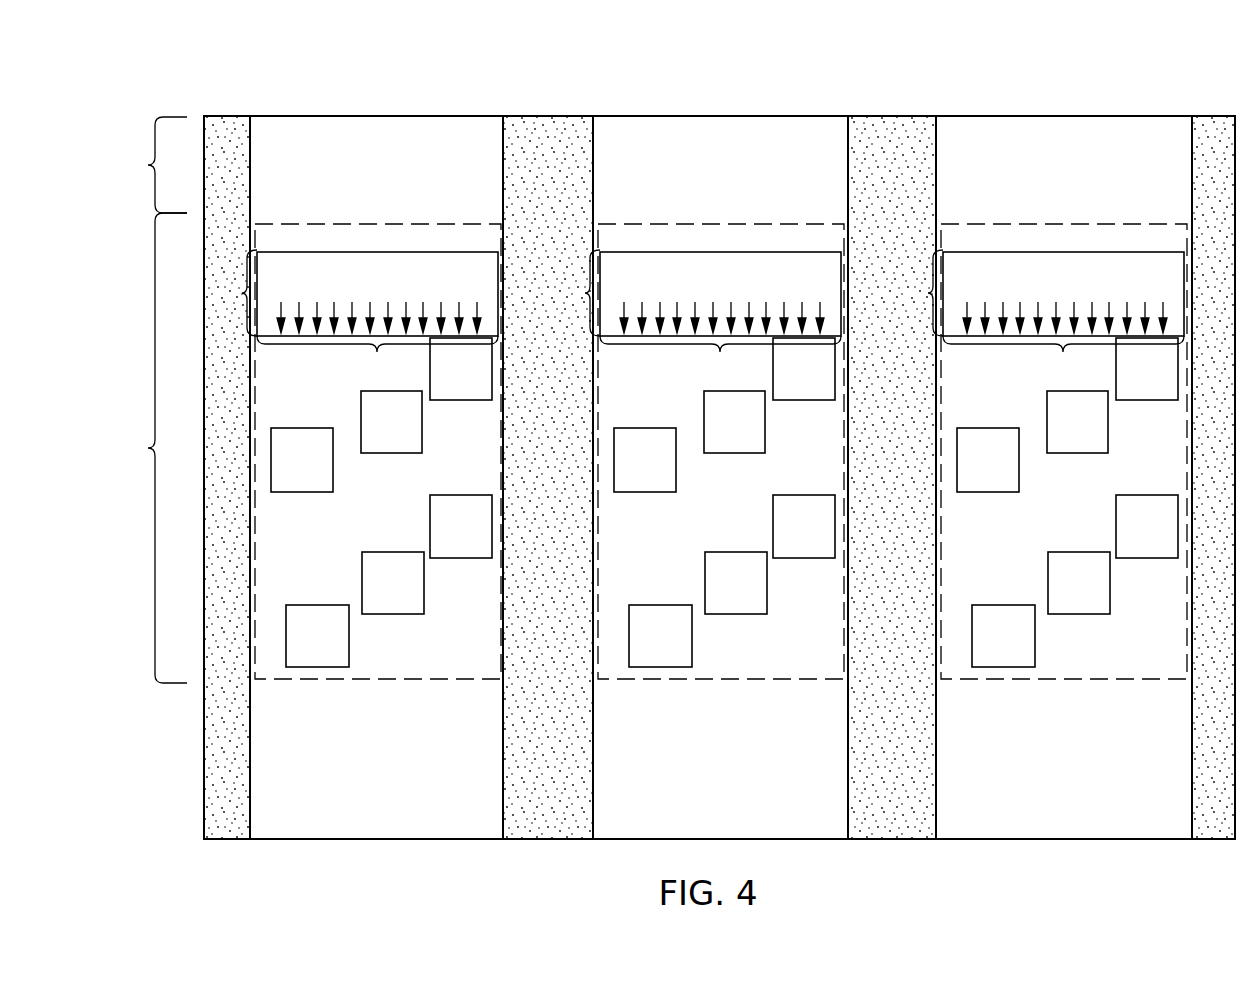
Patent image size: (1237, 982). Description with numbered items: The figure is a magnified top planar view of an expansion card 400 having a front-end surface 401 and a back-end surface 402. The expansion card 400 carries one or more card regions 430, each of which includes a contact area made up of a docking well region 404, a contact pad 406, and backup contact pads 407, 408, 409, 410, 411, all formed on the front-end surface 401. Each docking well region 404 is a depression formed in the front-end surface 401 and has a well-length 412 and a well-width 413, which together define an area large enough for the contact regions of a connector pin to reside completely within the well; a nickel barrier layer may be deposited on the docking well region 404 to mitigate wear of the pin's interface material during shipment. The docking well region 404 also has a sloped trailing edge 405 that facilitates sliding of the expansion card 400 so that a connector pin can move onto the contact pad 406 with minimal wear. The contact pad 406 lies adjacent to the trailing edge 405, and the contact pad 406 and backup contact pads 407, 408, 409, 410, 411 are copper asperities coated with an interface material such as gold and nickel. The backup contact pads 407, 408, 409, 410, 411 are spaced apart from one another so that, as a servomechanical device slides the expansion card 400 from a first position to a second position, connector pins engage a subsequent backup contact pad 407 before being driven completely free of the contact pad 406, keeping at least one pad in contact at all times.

The expansion card 400 is at (228, 76).
The front-end surface 401 is at (146, 448).
The back-end surface 402 is at (146, 165).
The docking well regions 404 is at (365, 278).
The trailing edge 405 is at (281, 308).
The contact pads 406 is at (443, 381).
The backup contact pad 407 is at (410, 434).
The backup contact pad 408 is at (284, 471).
The backup contact pad 409 is at (443, 538).
The backup contact pad 410 is at (375, 595).
The backup contact pad 411 is at (299, 648).
The well-length 412 is at (720, 358).
The well-width 413 is at (241, 293).
The card regions 430 is at (389, 223).